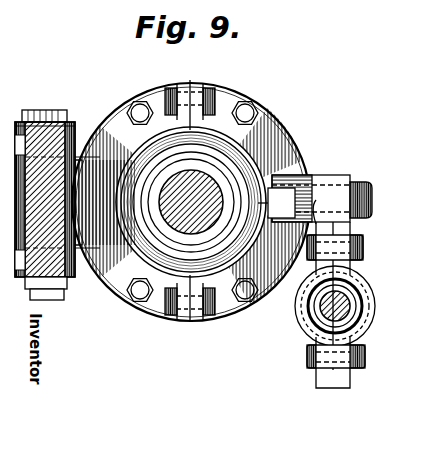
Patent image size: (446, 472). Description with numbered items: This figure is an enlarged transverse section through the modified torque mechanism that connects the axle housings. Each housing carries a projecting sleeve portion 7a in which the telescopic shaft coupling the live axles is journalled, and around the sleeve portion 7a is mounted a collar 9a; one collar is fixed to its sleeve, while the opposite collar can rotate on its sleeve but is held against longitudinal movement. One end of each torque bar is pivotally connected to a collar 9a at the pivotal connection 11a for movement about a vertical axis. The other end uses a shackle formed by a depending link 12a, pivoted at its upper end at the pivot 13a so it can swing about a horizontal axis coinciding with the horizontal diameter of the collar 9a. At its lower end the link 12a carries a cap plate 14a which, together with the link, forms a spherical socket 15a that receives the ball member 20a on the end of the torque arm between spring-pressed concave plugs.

The projecting sleeve portion 7a is at (143, 247).
The collar 9a is at (255, 138).
The pivotal connection 11a is at (58, 96).
The depending link 12a is at (327, 173).
The pivot 13a is at (372, 198).
The cap plate 14a is at (377, 308).
The spherical socket 15a is at (348, 318).
The ball member 20a is at (352, 293).